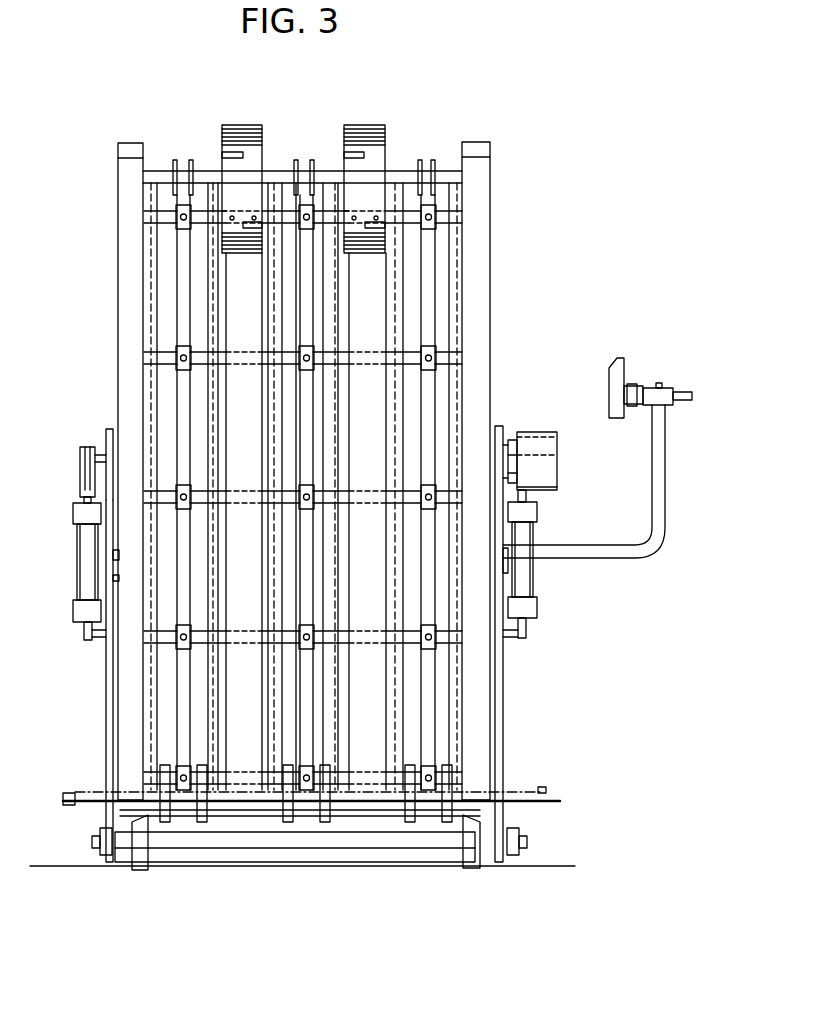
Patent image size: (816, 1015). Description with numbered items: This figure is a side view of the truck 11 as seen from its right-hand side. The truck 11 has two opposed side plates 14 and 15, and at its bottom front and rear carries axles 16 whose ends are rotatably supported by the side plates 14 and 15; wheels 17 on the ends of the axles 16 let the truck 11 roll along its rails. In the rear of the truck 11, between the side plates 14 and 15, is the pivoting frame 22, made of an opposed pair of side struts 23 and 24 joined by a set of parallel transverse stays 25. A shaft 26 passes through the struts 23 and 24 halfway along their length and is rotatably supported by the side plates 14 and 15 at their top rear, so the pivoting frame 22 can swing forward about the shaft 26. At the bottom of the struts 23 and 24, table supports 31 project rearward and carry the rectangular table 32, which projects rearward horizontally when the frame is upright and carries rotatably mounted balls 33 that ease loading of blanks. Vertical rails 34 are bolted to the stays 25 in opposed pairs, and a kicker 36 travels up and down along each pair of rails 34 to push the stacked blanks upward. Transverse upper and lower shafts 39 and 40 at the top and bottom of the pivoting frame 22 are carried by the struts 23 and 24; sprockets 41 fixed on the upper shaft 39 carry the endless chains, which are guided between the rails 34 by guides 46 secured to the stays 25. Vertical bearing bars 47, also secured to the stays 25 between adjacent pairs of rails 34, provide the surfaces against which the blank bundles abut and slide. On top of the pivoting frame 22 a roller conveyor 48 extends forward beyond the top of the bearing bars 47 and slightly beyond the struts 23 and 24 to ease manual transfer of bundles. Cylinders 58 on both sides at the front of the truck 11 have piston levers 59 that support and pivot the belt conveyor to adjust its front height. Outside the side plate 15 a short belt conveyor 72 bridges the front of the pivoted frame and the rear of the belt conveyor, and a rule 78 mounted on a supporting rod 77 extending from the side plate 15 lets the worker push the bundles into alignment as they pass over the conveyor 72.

The truck 11 is at (106, 430).
The side plate 14 is at (112, 727).
The side plate 15 is at (503, 658).
The axle 16 is at (286, 838).
The wheel 17 is at (140, 845).
The pivoting frame 22 is at (117, 165).
The side strut 23 is at (126, 200).
The side strut 24 is at (480, 198).
The transverse stay 25 is at (160, 355).
The shaft 26 is at (115, 567).
The table support 31 is at (490, 810).
The table 32 is at (560, 801).
The ball 33 is at (545, 790).
The vertical rail 34 is at (400, 298).
The kicker 36 is at (411, 822).
The upper shaft 39 is at (398, 175).
The lower shaft 40 is at (224, 823).
The sprocket 41 is at (433, 160).
The guide 46 is at (423, 262).
The vertical bearing bar 47 is at (240, 290).
The roller conveyor 48 is at (350, 147).
The cylinder 58 is at (88, 560).
The piston lever 59 is at (82, 498).
The short belt conveyor 72 is at (549, 432).
The supporting rod 77 is at (665, 508).
The rule 78 is at (618, 358).